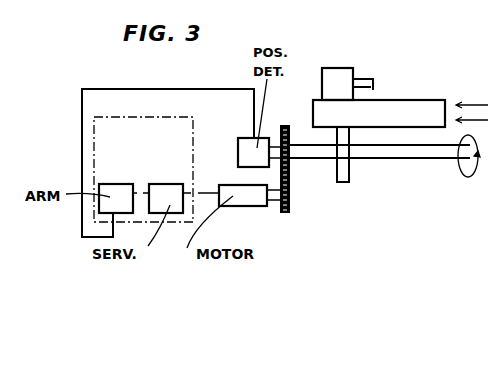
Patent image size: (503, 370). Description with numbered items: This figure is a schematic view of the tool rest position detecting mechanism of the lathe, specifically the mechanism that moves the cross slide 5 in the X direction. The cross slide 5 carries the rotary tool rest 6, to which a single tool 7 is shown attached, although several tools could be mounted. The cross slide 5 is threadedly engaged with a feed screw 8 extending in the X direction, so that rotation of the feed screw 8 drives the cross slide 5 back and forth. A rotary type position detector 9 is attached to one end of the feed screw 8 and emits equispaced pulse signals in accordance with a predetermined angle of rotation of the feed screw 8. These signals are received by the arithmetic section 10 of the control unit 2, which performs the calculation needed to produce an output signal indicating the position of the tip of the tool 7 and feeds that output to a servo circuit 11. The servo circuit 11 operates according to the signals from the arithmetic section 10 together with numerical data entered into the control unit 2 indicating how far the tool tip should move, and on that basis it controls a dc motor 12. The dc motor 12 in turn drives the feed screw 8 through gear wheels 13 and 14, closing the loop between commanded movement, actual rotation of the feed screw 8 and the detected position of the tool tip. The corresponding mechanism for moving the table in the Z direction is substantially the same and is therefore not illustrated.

The control unit 2 is at (133, 117).
The cross slide 5 is at (421, 100).
The rotary tool rest 6 is at (337, 68).
The tool 7 is at (368, 79).
The feed screw 8 is at (433, 158).
The rotary type position detector 9 is at (240, 138).
The arithmetic section 10 is at (118, 184).
The servo circuit 11 is at (168, 184).
The dc motor 12 is at (245, 206).
The gear wheel 13 is at (290, 214).
The gear wheel 14 is at (285, 125).